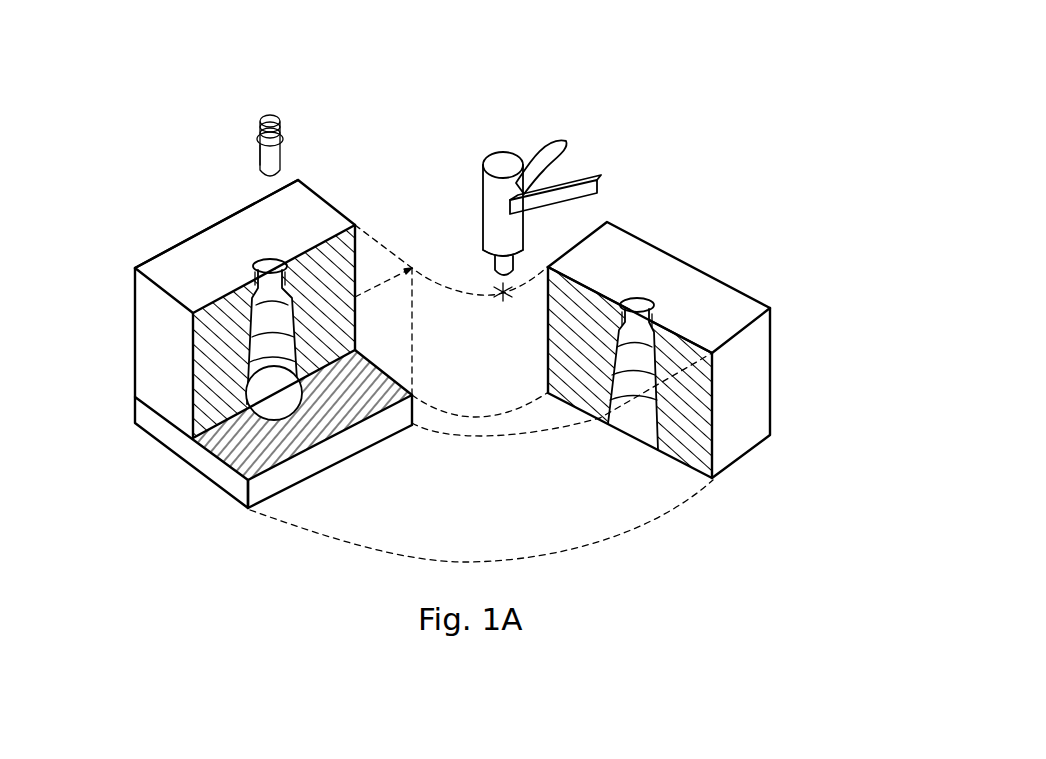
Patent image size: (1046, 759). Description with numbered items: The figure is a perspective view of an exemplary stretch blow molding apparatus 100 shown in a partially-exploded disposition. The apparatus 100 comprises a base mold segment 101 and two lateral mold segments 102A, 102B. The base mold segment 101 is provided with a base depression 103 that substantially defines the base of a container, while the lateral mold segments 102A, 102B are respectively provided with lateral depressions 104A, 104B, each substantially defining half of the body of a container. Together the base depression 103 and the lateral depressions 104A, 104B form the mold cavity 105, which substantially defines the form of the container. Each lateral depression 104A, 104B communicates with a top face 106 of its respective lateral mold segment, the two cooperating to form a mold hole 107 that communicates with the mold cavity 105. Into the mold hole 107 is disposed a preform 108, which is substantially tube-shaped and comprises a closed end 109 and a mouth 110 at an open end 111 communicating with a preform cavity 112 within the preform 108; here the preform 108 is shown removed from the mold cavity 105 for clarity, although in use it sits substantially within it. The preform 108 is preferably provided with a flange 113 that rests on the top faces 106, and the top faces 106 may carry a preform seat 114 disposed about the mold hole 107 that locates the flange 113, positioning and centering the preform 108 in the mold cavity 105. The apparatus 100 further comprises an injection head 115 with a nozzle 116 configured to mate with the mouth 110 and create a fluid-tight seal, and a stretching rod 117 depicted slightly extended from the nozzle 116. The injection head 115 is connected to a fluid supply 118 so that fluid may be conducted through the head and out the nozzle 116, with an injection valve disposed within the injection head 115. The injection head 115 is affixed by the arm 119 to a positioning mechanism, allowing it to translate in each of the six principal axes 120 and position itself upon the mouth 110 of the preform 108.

The stretch blow molding apparatus 100 is at (700, 530).
The base mold segment 101 is at (230, 483).
The lateral mold segment 102A is at (145, 320).
The lateral mold segment 102B is at (740, 423).
The base depression 103 is at (290, 412).
The lateral depression 104A is at (276, 316).
The lateral depression 104B is at (633, 412).
The mold cavity 105 is at (255, 385).
The top face 106 is at (187, 258).
The mold hole 107 is at (253, 267).
The preform 108 is at (281, 147).
The closed end 109 is at (291, 178).
The mouth 110 is at (260, 103).
The open end 111 is at (274, 102).
The preform cavity 112 is at (260, 145).
The flange 113 is at (295, 118).
The preform seat 114 is at (247, 263).
The injection head 115 is at (488, 165).
The nozzle 116 is at (523, 248).
The stretching rod 117 is at (482, 260).
The fluid supply 118 is at (570, 133).
The arm 119 is at (590, 206).
The six principal axes 120 is at (503, 302).